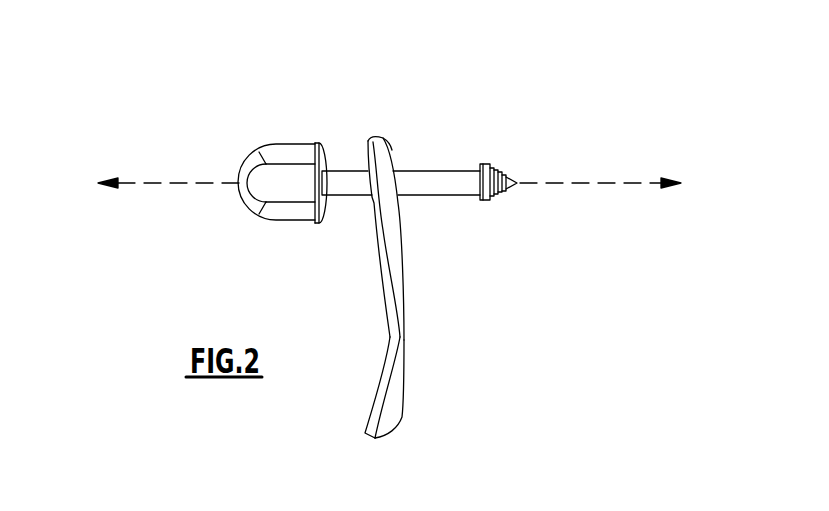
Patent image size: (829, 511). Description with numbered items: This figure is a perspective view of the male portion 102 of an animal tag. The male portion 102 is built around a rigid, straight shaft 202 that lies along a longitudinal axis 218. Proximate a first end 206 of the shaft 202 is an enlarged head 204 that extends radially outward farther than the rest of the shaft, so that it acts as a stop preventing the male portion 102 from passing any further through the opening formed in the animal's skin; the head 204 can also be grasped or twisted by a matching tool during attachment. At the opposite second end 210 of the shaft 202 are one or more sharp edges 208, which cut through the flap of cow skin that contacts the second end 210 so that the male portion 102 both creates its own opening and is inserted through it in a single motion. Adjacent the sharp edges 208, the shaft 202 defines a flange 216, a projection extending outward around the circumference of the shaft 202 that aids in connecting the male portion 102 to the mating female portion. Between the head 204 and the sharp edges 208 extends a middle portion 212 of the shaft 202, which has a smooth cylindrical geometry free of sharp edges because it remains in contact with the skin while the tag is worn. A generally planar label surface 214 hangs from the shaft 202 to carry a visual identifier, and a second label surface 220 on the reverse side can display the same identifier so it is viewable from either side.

The male portion 102 is at (619, 66).
The shaft 202 is at (438, 196).
The head 204 is at (258, 188).
The first end 206 is at (192, 157).
The sharp edges 208 is at (502, 172).
The second end 210 is at (539, 197).
The middle portion 212 is at (483, 98).
The label surface 214 is at (393, 287).
The flange 216 is at (485, 166).
The longitudinal axis 218 is at (633, 183).
The second label surface 220 is at (395, 398).